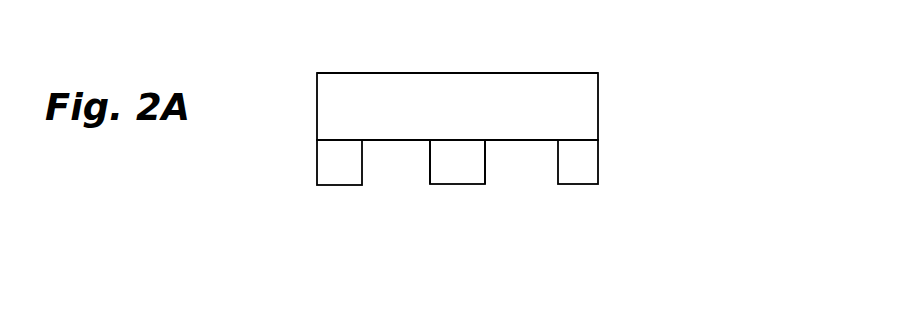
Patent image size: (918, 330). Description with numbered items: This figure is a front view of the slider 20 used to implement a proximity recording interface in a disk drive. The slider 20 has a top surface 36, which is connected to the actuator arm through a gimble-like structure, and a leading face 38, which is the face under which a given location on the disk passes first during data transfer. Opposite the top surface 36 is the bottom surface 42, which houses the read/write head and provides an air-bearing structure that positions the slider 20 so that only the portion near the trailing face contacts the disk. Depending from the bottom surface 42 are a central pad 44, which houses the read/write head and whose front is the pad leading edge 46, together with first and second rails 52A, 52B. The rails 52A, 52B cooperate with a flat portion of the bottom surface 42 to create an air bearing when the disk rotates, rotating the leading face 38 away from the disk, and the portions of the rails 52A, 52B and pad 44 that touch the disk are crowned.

The slider 20 is at (677, 83).
The top surface 36 is at (445, 73).
The leading face 38 is at (357, 115).
The bottom surface 42 is at (412, 237).
The pad 44 is at (457, 197).
The pad leading edge 46 is at (486, 163).
The first rail 52A is at (328, 187).
The second rail 52B is at (590, 185).